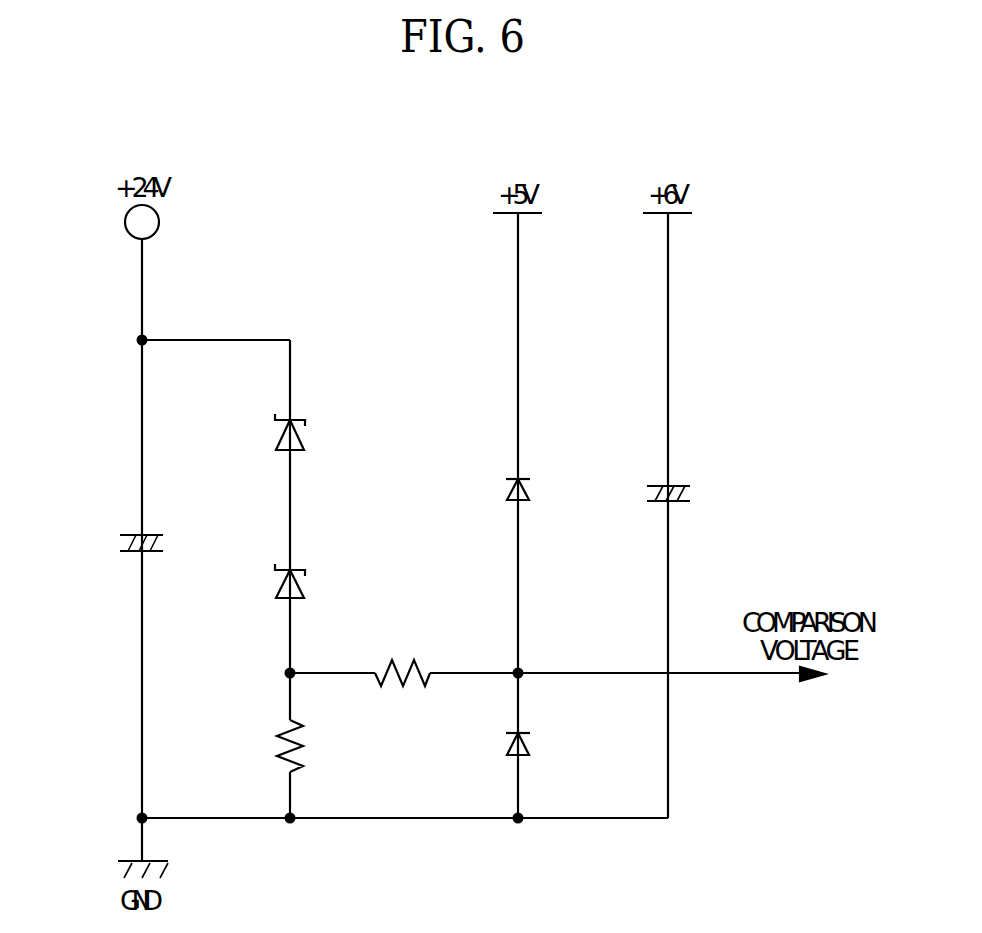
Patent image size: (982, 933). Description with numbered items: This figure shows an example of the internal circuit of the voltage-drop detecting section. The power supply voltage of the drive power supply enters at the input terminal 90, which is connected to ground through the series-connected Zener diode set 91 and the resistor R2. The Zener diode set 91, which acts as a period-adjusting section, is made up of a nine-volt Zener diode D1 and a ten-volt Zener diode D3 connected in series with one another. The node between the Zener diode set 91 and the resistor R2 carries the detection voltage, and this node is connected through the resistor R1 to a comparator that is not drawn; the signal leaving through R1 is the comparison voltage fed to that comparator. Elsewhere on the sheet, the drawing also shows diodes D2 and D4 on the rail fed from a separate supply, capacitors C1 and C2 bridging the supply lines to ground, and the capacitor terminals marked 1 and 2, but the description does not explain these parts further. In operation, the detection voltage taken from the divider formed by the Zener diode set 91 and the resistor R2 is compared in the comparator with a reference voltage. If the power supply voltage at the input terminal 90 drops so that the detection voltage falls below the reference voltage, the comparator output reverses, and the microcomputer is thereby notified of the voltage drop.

The input terminal 90 is at (160, 222).
The Zener diode set 91 is at (322, 506).
The 9 V Zener diode D1 is at (291, 432).
The 10 V Zener diode D3 is at (296, 581).
The diode D2 is at (541, 488).
The diode D4 is at (541, 751).
The resistor R1 is at (402, 677).
The resistor R2 is at (294, 746).
The electrolytic capacitor C1 (16v 100uF) C1 is at (698, 513).
The electrolytic capacitor C2 (35v 100uF) C2 is at (120, 545).
The capacitor terminal 1 (positive) 1 is at (141, 518).
The capacitor terminal 2 (negative) 2 is at (141, 571).